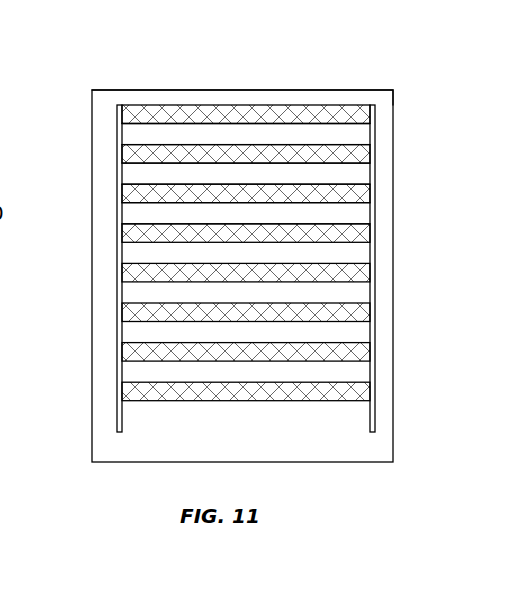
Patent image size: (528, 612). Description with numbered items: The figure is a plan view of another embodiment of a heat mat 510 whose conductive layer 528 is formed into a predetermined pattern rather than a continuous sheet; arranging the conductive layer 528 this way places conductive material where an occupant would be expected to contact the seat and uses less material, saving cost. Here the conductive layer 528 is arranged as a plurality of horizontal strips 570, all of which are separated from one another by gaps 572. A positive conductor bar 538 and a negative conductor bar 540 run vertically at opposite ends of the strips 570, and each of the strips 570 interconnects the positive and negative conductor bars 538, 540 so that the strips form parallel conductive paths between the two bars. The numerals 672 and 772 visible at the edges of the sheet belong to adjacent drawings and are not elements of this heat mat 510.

The heat mat 510 is at (434, 45).
The conductive layer 528 is at (198, 95).
The strips 570 is at (274, 95).
The gaps 572 is at (364, 135).
The positive conductor bar 538 is at (117, 418).
The negative conductor bar 540 is at (375, 418).
The component of adjacent figure 672 is at (0, 479).
The component of adjacent figure 772 is at (504, 579).